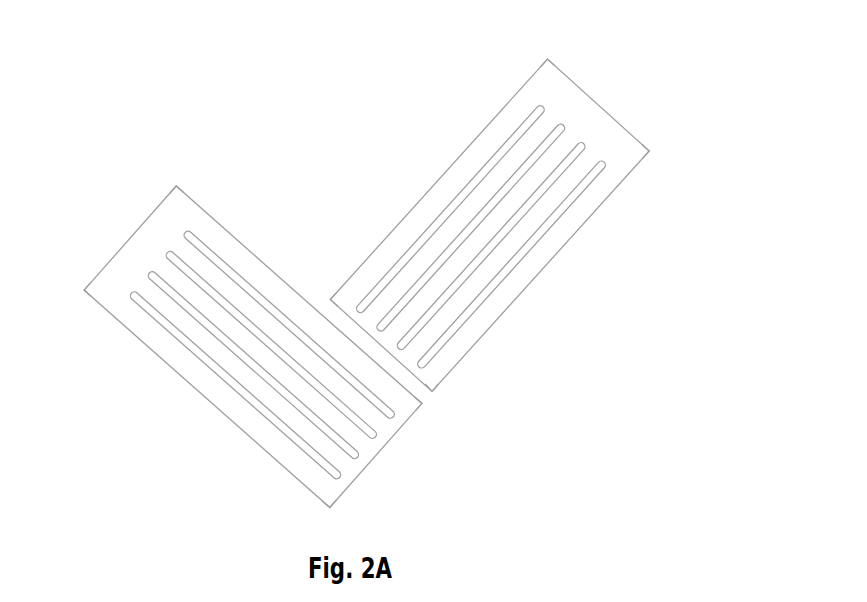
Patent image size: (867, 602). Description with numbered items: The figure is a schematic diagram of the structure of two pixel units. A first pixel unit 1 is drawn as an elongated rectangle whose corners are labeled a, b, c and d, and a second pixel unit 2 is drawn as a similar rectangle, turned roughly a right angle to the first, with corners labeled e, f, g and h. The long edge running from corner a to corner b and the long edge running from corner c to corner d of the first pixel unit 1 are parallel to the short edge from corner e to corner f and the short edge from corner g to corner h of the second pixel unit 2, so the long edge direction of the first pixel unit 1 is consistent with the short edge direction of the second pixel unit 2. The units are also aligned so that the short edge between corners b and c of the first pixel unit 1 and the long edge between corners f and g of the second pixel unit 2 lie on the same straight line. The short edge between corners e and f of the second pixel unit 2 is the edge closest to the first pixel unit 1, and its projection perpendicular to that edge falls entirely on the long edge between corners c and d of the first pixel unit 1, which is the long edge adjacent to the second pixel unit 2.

The first pixel unit 1 is at (238, 342).
The second pixel unit 2 is at (573, 108).
The vertex a of first pixel unit a is at (84, 301).
The vertex b of first pixel unit b is at (321, 512).
The vertex c of first pixel unit c is at (423, 418).
The vertex d of first pixel unit d is at (183, 183).
The vertex e of second pixel unit e is at (327, 293).
The vertex f of second pixel unit f is at (447, 385).
The vertex g of second pixel unit g is at (664, 160).
The vertex h of second pixel unit h is at (541, 56).